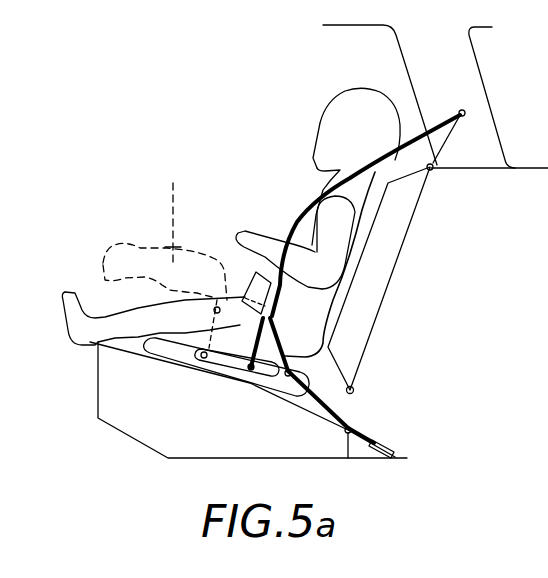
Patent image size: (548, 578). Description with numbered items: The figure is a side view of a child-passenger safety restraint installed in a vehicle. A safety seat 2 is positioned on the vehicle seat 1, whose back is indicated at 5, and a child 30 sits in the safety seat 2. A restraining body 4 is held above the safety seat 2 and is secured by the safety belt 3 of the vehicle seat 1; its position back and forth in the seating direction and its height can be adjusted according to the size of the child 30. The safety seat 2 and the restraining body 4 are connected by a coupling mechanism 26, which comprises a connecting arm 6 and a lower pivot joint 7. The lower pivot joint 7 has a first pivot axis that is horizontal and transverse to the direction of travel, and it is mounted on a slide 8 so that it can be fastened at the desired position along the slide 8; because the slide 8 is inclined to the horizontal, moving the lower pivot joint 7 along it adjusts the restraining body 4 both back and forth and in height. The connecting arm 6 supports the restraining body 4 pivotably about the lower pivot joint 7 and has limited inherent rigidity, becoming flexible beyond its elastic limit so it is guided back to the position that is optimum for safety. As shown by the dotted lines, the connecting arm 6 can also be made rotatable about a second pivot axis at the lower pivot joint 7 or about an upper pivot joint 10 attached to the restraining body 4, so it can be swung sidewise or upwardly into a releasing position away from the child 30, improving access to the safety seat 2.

The vehicle seat 1 is at (112, 418).
The safety seat 2 is at (183, 352).
The safety belt 3 is at (421, 128).
The restraining body 4 is at (258, 297).
The back of the vehicle seat 5 is at (398, 238).
The connecting arm 6 is at (260, 322).
The lower pivot joint 7 is at (250, 360).
The slide 8 is at (222, 358).
The upper pivot joint 10 is at (273, 318).
The coupling mechanism 26 is at (290, 343).
The child 30 is at (323, 297).